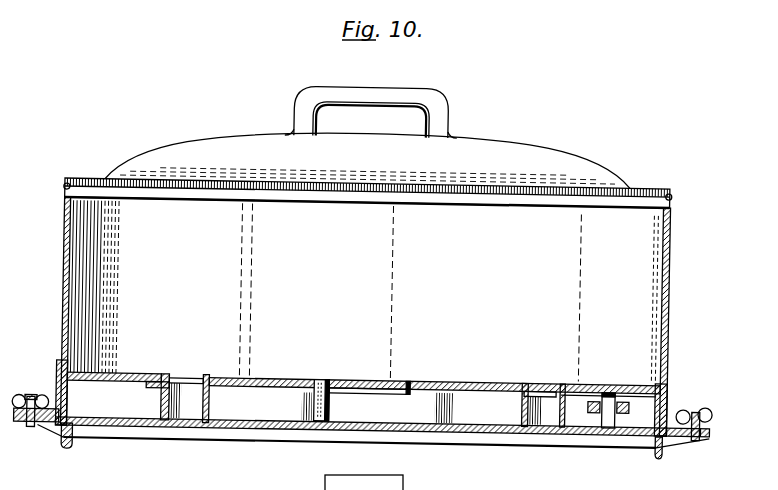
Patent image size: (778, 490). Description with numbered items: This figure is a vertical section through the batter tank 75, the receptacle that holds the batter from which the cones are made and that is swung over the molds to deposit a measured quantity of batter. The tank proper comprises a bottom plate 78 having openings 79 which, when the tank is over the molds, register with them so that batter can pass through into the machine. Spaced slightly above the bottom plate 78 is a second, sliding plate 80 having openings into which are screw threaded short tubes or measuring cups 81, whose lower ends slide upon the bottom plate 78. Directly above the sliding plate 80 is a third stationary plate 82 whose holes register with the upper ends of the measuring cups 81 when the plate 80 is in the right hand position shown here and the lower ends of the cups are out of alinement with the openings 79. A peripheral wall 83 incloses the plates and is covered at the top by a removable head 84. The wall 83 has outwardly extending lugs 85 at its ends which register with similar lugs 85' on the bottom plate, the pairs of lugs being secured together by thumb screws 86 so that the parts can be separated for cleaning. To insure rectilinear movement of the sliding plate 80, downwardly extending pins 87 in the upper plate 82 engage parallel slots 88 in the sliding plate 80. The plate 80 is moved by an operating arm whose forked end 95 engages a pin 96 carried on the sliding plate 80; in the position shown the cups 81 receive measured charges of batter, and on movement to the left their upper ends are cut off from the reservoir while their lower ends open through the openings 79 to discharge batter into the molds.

The tank 75 is at (499, 129).
The removable head 84 is at (600, 188).
The peripheral wall 83 is at (674, 303).
The third stationary plate 82 is at (401, 380).
The downwardly extending pins 87 is at (336, 398).
The parallel slots 88 is at (376, 384).
The measuring cups 81 is at (545, 376).
The second plate 80 is at (586, 386).
The pin 96 is at (617, 418).
The forked end 95 is at (599, 403).
The bottom plate 78 is at (511, 429).
The openings 79 is at (473, 426).
The lugs 85 is at (708, 418).
The lugs 85' is at (677, 459).
The thumb screws 86 is at (707, 396).